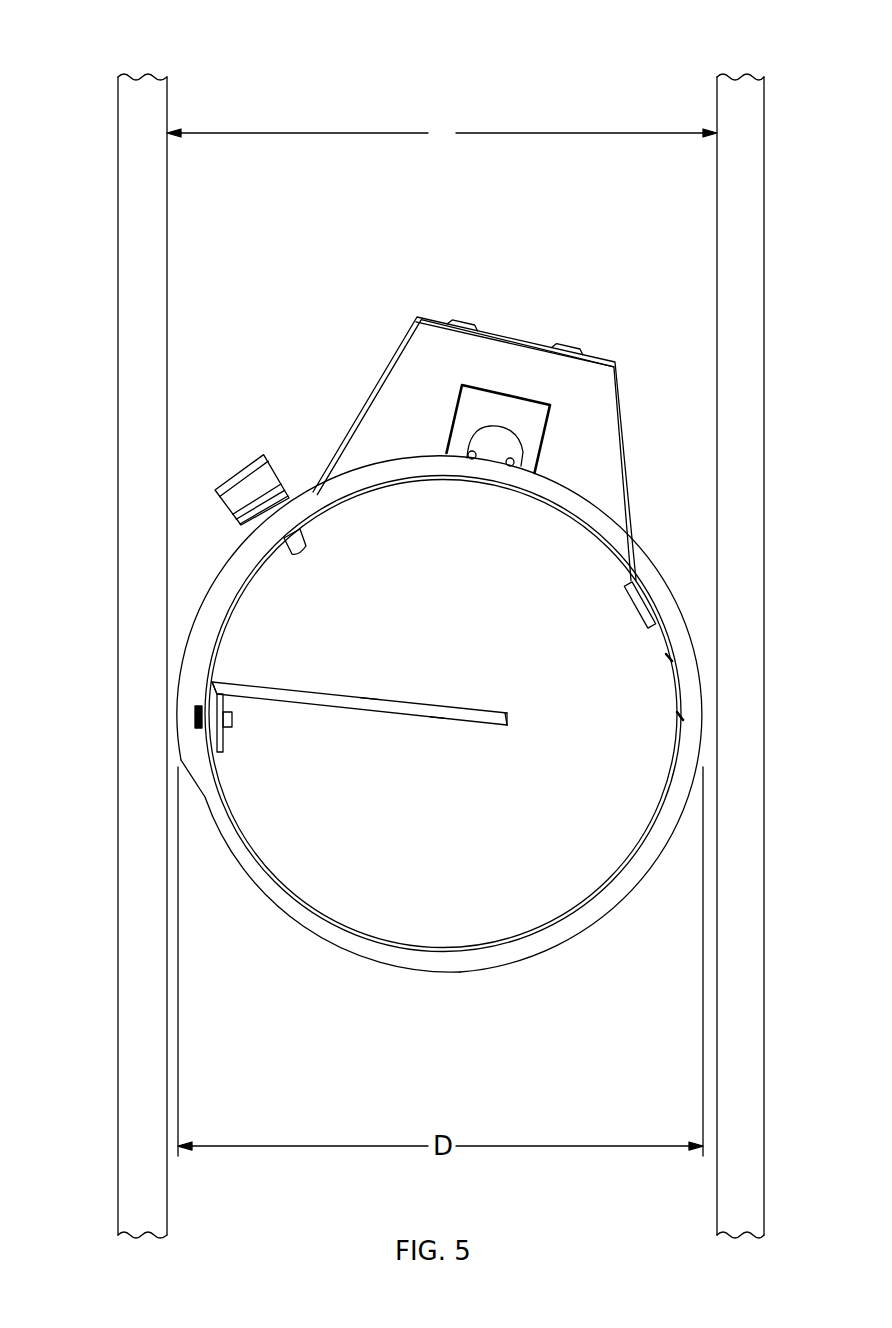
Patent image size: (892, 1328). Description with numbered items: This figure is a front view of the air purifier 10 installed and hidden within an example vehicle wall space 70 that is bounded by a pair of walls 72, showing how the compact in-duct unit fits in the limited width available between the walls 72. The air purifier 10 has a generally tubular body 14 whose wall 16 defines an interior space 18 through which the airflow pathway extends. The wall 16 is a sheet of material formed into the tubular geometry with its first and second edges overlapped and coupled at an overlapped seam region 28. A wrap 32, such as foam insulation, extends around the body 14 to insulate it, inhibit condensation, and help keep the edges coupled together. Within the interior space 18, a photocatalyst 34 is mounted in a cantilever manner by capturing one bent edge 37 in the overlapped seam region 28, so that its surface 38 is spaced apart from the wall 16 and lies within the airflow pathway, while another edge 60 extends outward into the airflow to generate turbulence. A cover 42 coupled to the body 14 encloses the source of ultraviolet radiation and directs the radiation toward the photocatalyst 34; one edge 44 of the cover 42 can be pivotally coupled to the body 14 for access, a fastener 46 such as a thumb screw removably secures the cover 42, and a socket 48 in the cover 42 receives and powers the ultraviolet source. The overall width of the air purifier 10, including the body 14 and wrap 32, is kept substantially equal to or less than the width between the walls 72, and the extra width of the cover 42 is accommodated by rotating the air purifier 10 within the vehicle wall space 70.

The air purifier 10 is at (487, 296).
The body 14 is at (229, 875).
The wall 16 is at (338, 921).
The interior space 18 is at (532, 870).
The overlapped seam region 28 is at (242, 698).
The wrap 32 is at (504, 964).
The photocatalyst 34 is at (289, 692).
The edge of the photocatalyst 37 is at (224, 669).
The surface 38 is at (374, 686).
The cover 42 is at (607, 396).
The edge of the cover 44 is at (643, 628).
The fastener 46 is at (250, 478).
The socket 48 is at (466, 408).
The edge of the photocatalyst 60 is at (516, 697).
The vehicle wall space 70 is at (259, 96).
The walls 72 is at (118, 248).